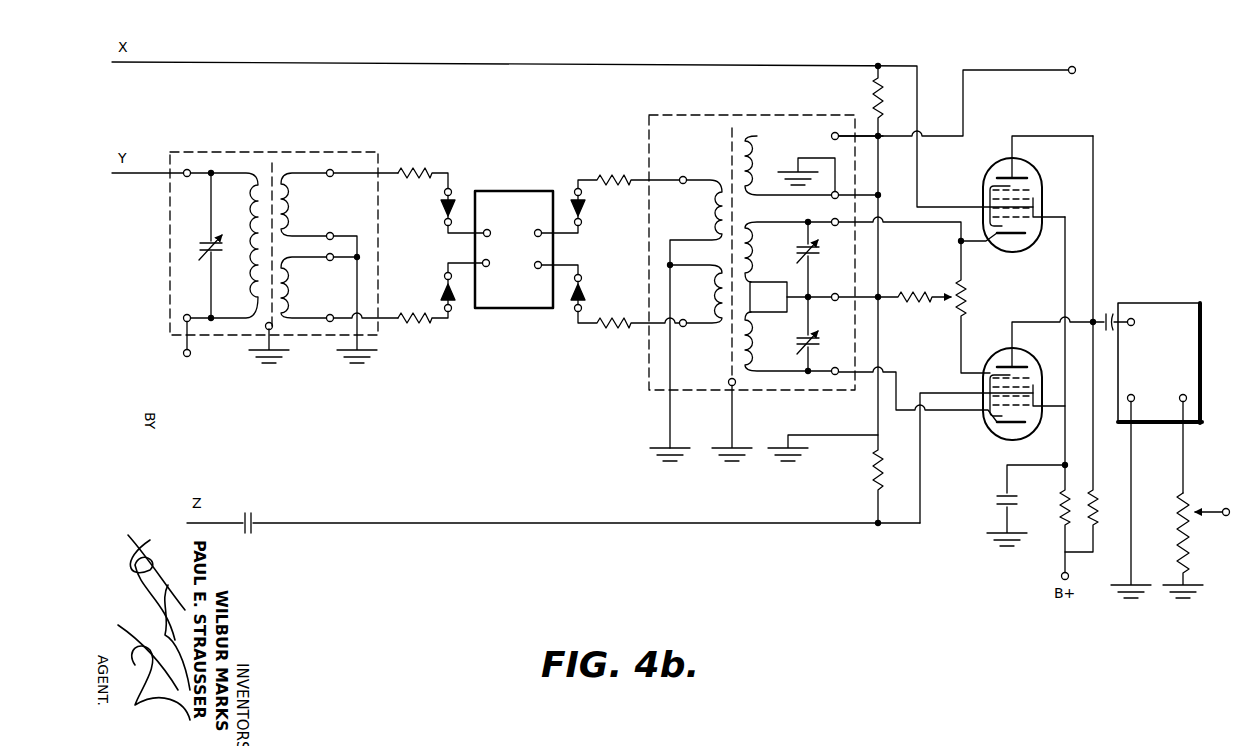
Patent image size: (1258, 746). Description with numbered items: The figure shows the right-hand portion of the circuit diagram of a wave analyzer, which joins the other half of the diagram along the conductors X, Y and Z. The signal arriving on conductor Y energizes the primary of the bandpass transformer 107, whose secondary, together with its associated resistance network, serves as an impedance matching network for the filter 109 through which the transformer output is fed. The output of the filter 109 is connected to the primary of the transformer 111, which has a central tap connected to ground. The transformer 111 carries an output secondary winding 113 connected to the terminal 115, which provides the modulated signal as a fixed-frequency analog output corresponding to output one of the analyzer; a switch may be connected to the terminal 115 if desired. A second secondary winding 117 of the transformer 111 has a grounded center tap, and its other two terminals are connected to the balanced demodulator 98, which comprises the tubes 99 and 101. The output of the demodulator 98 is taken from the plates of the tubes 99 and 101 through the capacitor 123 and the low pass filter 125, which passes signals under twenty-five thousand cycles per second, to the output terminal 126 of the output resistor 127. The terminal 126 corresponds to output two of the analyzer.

The bandpass transformer 107 is at (328, 152).
The filter 109 is at (508, 191).
The transformer 111 is at (680, 115).
The output secondary winding 113 is at (752, 150).
The secondary winding 117 is at (768, 297).
The balanced demodulator 98 is at (999, 296).
The tube 99 is at (1038, 170).
The tube 101 is at (995, 348).
The terminal 115 is at (1073, 66).
The capacitor 123 is at (1108, 313).
The low pass filter 125 is at (1160, 303).
The output terminal 126 is at (1224, 517).
The output resistor 127 is at (1187, 500).